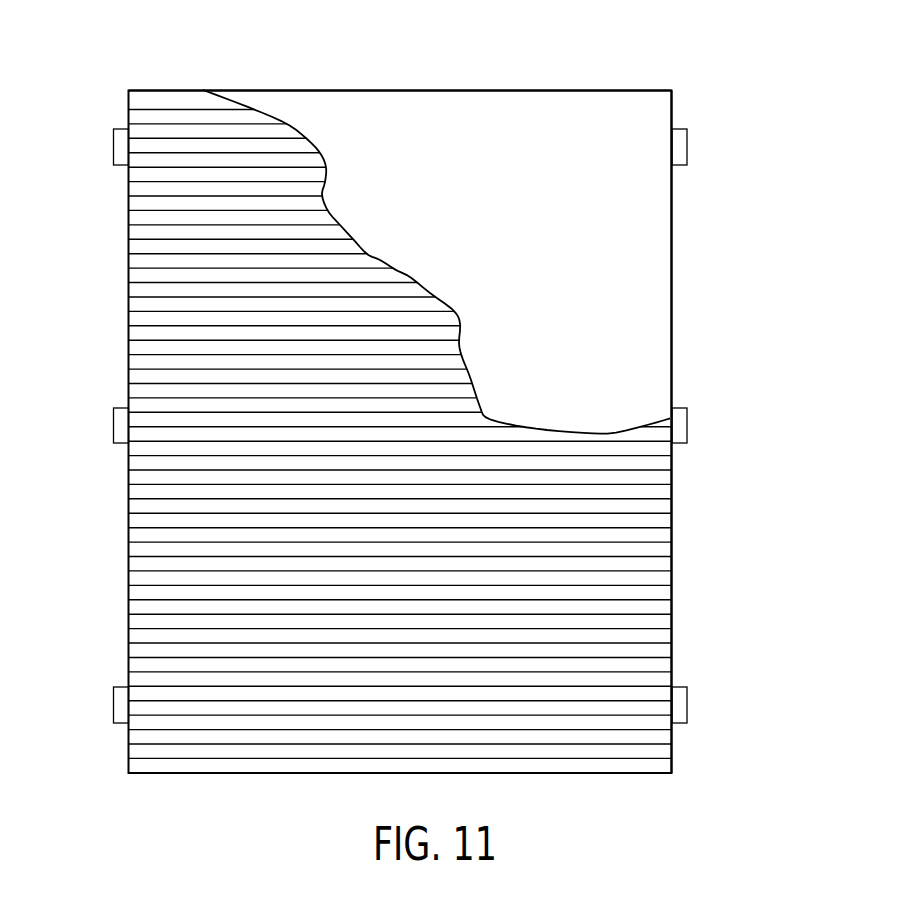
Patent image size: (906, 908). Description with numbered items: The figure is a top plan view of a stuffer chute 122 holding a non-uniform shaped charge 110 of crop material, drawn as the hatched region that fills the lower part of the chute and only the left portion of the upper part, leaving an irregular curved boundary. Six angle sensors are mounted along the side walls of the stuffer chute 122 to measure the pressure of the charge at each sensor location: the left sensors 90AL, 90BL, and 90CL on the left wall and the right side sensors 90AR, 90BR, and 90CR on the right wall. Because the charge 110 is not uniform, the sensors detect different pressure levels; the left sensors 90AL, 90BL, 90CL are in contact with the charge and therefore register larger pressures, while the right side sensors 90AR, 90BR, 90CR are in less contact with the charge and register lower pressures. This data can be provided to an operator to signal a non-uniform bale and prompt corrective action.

The non-uniform shaped charge 110 is at (148, 342).
The stuffer chute 122 is at (127, 85).
The left sensor 90CL is at (137, 155).
The left sensor 90BL is at (137, 432).
The left sensor 90AL is at (137, 712).
The right side sensor 90CR is at (665, 153).
The right side sensor 90BR is at (668, 432).
The right side sensor 90AR is at (663, 712).